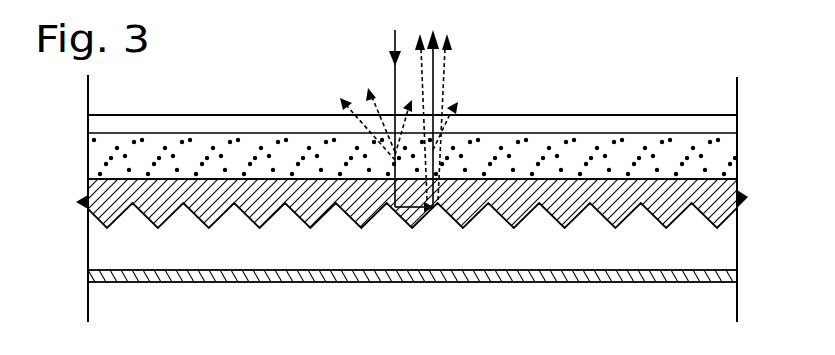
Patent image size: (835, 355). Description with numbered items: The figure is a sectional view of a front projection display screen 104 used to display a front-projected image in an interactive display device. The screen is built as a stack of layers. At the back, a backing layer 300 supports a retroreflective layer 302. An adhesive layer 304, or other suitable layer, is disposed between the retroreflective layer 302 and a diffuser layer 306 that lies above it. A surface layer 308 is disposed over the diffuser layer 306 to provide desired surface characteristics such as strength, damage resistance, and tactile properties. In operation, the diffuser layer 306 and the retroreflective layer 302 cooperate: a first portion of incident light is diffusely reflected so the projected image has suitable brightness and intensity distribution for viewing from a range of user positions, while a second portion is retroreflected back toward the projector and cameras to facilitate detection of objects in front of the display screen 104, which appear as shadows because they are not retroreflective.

The display screen 104 is at (671, 57).
The surface layer 308 is at (728, 125).
The diffuser layer 306 is at (728, 152).
The adhesive layer 304 is at (728, 190).
The retroreflective layer 302 is at (728, 238).
The backing layer 300 is at (728, 273).